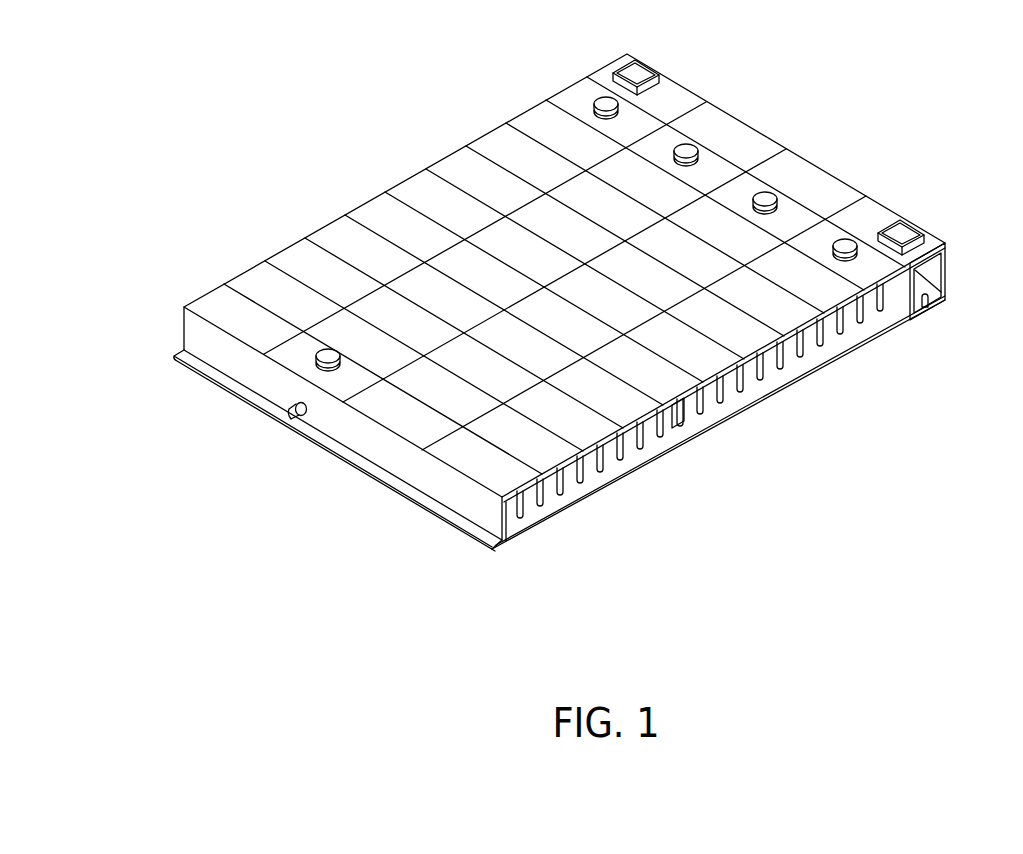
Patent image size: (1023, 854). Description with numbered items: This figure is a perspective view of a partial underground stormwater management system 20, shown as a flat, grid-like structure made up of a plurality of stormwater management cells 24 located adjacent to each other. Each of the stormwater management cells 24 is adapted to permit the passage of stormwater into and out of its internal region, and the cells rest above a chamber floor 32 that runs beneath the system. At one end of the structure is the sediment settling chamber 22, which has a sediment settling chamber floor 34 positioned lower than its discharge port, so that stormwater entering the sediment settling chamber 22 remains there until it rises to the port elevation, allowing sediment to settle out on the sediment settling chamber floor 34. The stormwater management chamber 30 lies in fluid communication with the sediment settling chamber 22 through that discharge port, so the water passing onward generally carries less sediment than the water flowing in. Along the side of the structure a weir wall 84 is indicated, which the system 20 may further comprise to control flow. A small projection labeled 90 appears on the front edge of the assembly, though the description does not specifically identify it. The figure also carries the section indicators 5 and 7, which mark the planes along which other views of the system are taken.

The underground stormwater management system 20 is at (587, 324).
The stormwater management cells 24 is at (456, 144).
The sediment settling chamber 22 is at (948, 243).
The sediment settling chamber floor 34 is at (925, 303).
The chamber floor 32 is at (757, 392).
The weir wall 84 is at (683, 443).
The stormwater management chamber 30 is at (636, 514).
The pin 90 is at (290, 420).
The section line 5- 5 is at (846, 244).
The section line 7- 7 is at (520, 435).